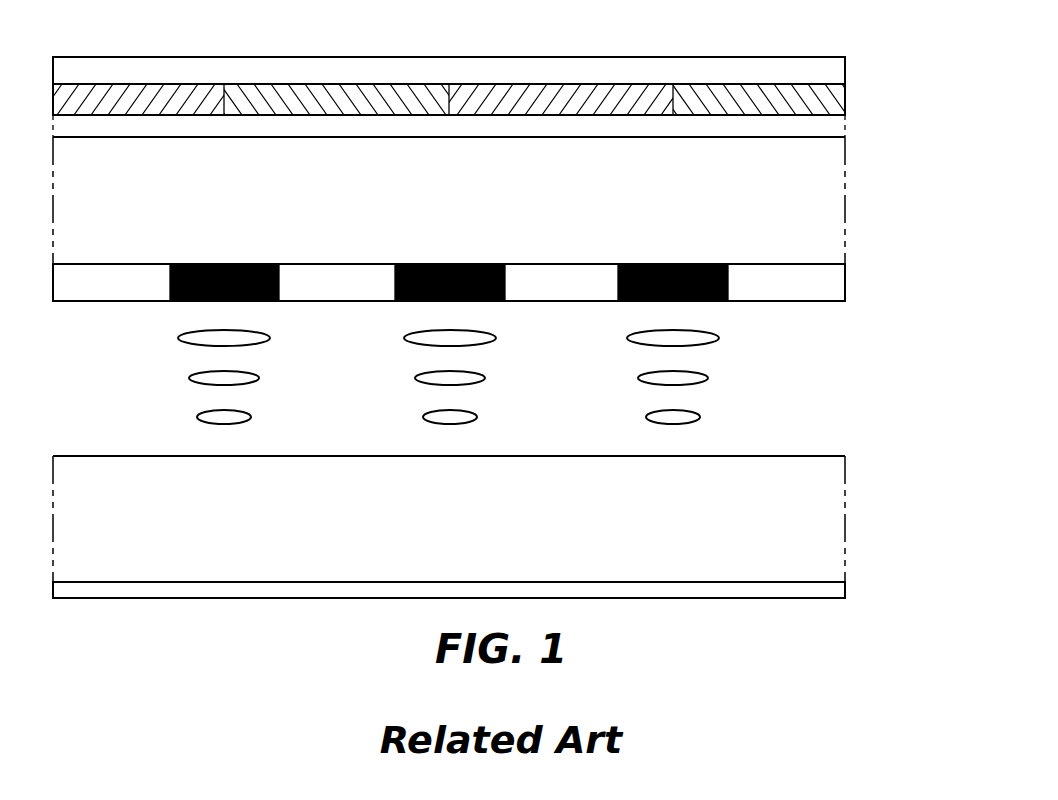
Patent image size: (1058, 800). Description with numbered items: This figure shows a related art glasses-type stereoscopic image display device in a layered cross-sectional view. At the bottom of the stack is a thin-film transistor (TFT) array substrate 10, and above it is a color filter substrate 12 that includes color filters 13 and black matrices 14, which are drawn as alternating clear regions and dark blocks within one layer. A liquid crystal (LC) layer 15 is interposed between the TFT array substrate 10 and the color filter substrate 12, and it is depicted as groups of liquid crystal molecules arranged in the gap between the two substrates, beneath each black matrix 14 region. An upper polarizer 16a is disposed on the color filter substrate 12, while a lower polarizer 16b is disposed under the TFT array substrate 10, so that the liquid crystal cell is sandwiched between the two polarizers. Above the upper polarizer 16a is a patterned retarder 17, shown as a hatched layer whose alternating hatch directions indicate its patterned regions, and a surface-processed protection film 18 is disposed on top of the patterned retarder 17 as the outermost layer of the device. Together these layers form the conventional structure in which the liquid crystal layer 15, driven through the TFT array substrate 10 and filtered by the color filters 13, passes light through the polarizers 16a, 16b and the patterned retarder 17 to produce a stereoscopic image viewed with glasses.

The thin-film transistor (TFT) array substrate 10 is at (838, 509).
The color filter substrate 12 is at (838, 210).
The color filters 13 is at (838, 288).
The black matrices 14 is at (705, 301).
The liquid crystal (LC) layer 15 is at (708, 378).
The upper polarizer 16a is at (838, 128).
The lower polarizer 16b is at (838, 591).
The patterned retarder 17 is at (838, 102).
The surface-processed protection film 18 is at (838, 68).